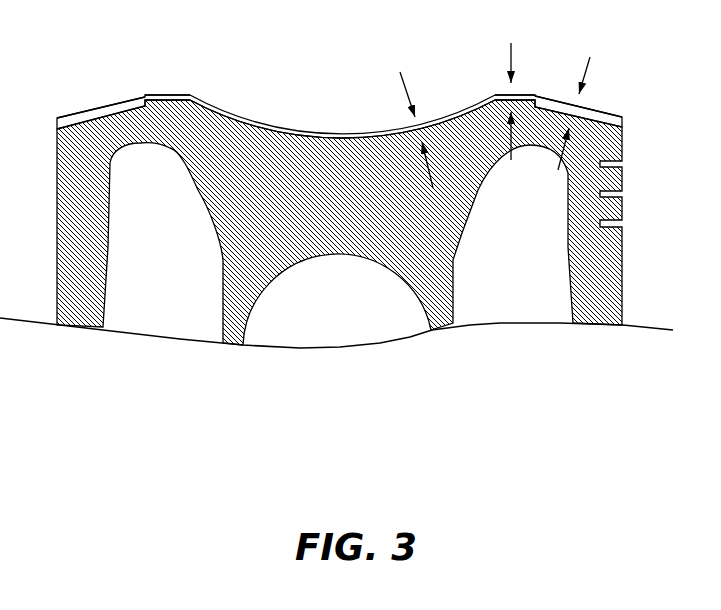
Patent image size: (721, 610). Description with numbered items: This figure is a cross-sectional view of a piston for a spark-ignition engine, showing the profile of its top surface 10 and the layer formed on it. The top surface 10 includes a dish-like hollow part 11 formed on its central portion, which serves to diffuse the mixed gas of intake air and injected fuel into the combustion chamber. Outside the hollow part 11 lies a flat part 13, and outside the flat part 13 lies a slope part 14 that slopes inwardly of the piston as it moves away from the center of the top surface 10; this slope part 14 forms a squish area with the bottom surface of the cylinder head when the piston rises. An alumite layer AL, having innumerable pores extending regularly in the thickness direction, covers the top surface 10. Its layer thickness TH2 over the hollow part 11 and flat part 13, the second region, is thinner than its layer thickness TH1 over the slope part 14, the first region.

The top surface 10 is at (353, 188).
The hollow part 11 is at (304, 128).
The flat part 13 is at (163, 94).
The slope part 14 is at (97, 108).
The alumite layer AL is at (117, 107).
The layer thickness TH1 is at (590, 98).
The layer thickness TH2 is at (415, 124).